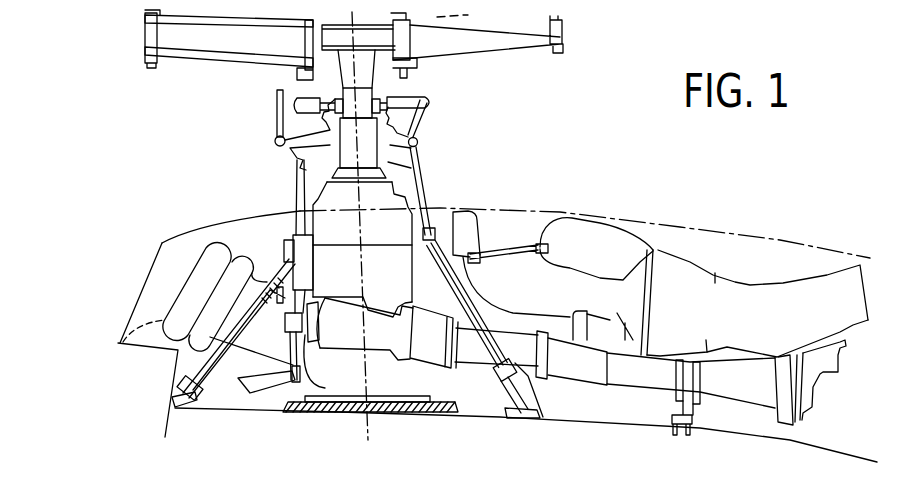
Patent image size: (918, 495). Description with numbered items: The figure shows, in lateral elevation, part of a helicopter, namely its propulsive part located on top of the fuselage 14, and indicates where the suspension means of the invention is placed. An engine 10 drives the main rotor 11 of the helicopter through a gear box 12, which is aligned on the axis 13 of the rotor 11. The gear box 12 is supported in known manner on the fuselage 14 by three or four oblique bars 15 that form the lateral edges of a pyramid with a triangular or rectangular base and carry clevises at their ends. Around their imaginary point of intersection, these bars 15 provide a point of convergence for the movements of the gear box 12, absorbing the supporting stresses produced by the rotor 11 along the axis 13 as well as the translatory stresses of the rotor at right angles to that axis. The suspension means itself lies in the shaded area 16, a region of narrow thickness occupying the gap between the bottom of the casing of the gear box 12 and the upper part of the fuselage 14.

The engine 10 is at (706, 255).
The main rotor 11 is at (203, 62).
The gear box 12 is at (398, 282).
The axis 13 is at (368, 433).
The fuselage 14 is at (546, 457).
The oblique bars 15 is at (212, 362).
The shaded area 16 is at (441, 399).